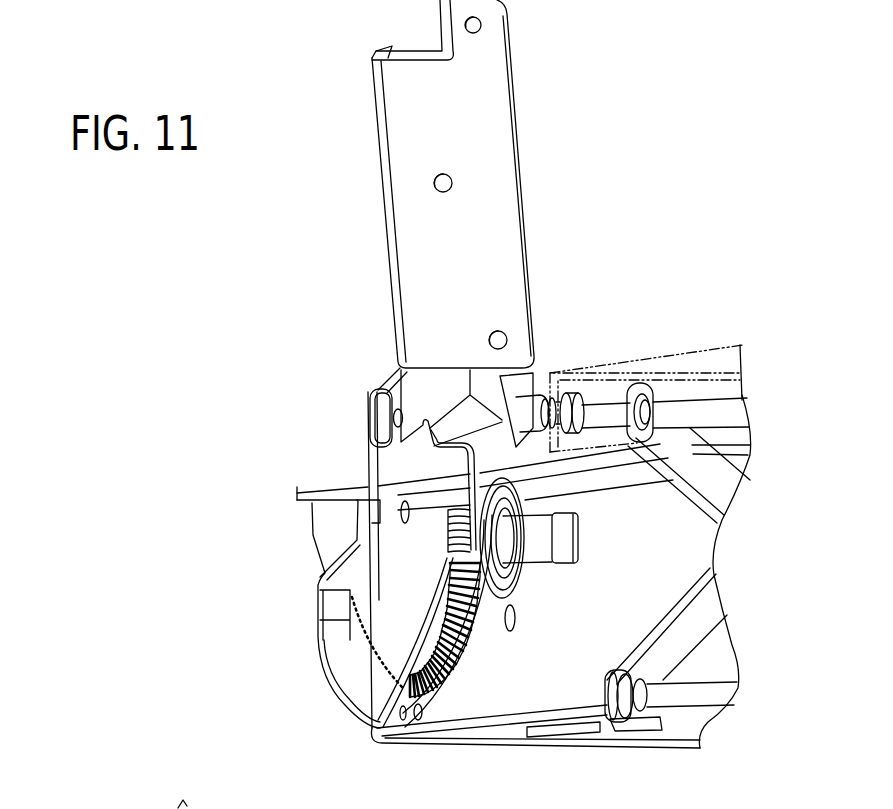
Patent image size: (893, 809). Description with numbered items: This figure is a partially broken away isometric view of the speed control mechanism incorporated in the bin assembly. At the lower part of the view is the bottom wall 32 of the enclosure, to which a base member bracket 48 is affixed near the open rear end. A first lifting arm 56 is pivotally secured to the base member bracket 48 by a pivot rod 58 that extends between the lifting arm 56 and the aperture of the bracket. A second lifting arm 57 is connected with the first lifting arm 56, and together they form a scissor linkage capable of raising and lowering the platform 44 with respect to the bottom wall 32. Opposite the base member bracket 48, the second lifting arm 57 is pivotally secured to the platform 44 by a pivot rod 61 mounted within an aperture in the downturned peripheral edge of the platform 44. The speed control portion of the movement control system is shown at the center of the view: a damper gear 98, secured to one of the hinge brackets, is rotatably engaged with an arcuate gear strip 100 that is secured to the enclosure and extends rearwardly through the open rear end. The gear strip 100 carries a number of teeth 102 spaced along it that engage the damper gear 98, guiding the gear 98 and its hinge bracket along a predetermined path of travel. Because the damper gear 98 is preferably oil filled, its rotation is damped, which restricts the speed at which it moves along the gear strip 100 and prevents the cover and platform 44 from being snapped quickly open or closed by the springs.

The bottom wall 32 is at (508, 746).
The platform 44 is at (702, 352).
The base member bracket 48 is at (615, 722).
The first lifting arm 56 is at (722, 482).
The second lifting arm 57 is at (698, 615).
The pivot rod 58 is at (710, 698).
The pivot rod 61 is at (600, 418).
The damper gear 98 is at (523, 550).
The arcuate gear strip 100 is at (320, 690).
The teeth 102 is at (416, 684).